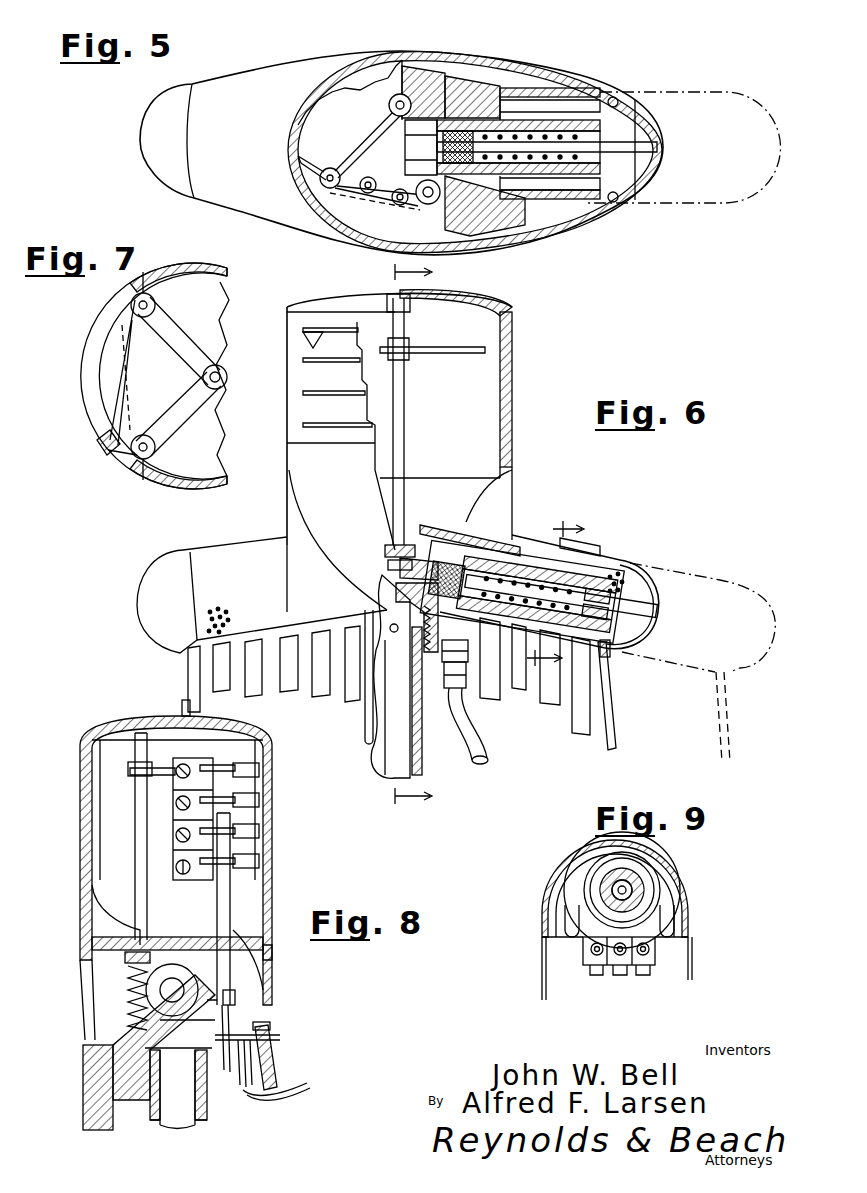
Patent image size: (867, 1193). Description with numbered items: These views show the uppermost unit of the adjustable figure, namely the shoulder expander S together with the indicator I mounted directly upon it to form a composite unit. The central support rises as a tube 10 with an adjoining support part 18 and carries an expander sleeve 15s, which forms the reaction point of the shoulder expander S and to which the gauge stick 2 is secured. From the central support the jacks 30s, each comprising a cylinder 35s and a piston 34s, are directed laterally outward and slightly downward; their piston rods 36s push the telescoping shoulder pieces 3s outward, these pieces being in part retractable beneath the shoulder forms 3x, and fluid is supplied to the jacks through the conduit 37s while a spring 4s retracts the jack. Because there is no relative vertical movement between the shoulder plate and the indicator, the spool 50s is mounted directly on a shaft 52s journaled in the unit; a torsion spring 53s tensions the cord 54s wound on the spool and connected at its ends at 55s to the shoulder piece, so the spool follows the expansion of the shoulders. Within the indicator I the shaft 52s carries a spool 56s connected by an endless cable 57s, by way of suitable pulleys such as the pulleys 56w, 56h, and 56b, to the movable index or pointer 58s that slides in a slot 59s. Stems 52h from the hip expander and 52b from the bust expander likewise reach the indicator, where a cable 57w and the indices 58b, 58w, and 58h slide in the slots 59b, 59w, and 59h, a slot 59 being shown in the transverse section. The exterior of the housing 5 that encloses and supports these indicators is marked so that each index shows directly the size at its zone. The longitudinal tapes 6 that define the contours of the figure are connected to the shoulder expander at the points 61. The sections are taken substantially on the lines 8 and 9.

In FIG. 8, the gauge stick 2 is at (92, 1117).
In FIG. 5, the telescoping shoulder pieces 3s is at (150, 157).
In FIG. 6, the telescoping shoulder pieces 3s is at (710, 546).
In FIG. 9, the telescoping shoulder pieces 3s is at (660, 903).
In FIG. 5, the shoulder forms 3x is at (215, 193).
In FIG. 6, the shoulder forms 3x is at (210, 548).
In FIG. 9, the shoulder forms 3x is at (552, 870).
In FIG. 6, the spring 4s is at (608, 656).
In FIG. 5, the housing 5 is at (300, 181).
In FIG. 7, the housing 5 is at (195, 265).
In FIG. 6, the housing 5 is at (292, 403).
In FIG. 8, the housing 5 is at (90, 798).
In FIG. 6, the longitudinals 6 is at (215, 672).
In FIG. 8, the longitudinals 6 is at (284, 1086).
In FIG. 9, the longitudinals 6 is at (612, 968).
In FIG. 5, the section line 8- 8 is at (406, 273).
In FIG. 6, the section line 8- 8 is at (406, 796).
In FIG. 6, the section line 9- 9 is at (555, 594).
In FIG. 6, the tube 10 is at (422, 764).
In FIG. 8, the tube 10 is at (192, 1117).
In FIG. 6, the expander sleeve 15s is at (375, 663).
In FIG. 8, the expander sleeve 15s is at (123, 1072).
In FIG. 6, the pipe coupling 18 is at (400, 752).
In FIG. 8, the pipe coupling 18 is at (178, 1109).
In FIG. 5, the jacks 30s is at (560, 126).
In FIG. 6, the jacks 30s is at (502, 628).
In FIG. 8, the jacks 30s is at (215, 992).
In FIG. 5, the pistons 34s is at (470, 162).
In FIG. 6, the pistons 34s is at (465, 572).
In FIG. 5, the cylinders 35s is at (545, 172).
In FIG. 6, the cylinders 35s is at (575, 562).
In FIG. 9, the cylinders 35s is at (625, 876).
In FIG. 5, the piston rods 36s is at (640, 140).
In FIG. 6, the piston rods 36s is at (625, 587).
In FIG. 9, the piston rods 36s is at (618, 893).
In FIG. 6, the conduit 37s is at (478, 762).
In FIG. 6, the spool 50s is at (408, 542).
In FIG. 8, the spool 50s is at (125, 958).
In FIG. 6, the shaft 52s is at (406, 418).
In FIG. 8, the shaft 52s is at (142, 911).
In FIG. 8, the stems 52h is at (228, 1012).
In FIG. 8, the stems 52b is at (295, 1063).
In FIG. 8, the torsion spring 53s is at (126, 1016).
In FIG. 5, the wire or cord 54s is at (462, 120).
In FIG. 6, the wire or cord 54s is at (445, 530).
In FIG. 8, the wire or cord 54s is at (173, 990).
In FIG. 6, the cord connection 55s is at (565, 550).
In FIG. 5, the spool 56s is at (405, 98).
In FIG. 7, the spool 56s is at (217, 366).
In FIG. 6, the spool 56s is at (410, 350).
In FIG. 8, the spool 56s is at (135, 769).
In FIG. 5, the pulley 56w is at (364, 177).
In FIG. 5, the pulley 56h is at (397, 205).
In FIG. 8, the pulley 56h is at (218, 895).
In FIG. 5, the pulley 56b is at (436, 206).
In FIG. 8, the pulley 56b is at (200, 816).
In FIG. 5, the endless cable 57s is at (372, 136).
In FIG. 7, the endless cable 57s is at (112, 406).
In FIG. 6, the endless cable 57s is at (432, 354).
In FIG. 8, the endless cable 57s is at (162, 776).
In FIG. 8, the endless cable 57w is at (203, 845).
In FIG. 7, the movable index or pointer 58s is at (100, 451).
In FIG. 6, the movable index or pointer 58s is at (312, 330).
In FIG. 8, the movable index or pointer 58s is at (263, 770).
In FIG. 8, the index 58b is at (263, 800).
In FIG. 8, the index 58w is at (263, 830).
In FIG. 8, the index 58h is at (263, 860).
In FIG. 7, the slot 59 is at (93, 334).
In FIG. 6, the slot 59s is at (340, 328).
In FIG. 8, the slot 59s is at (280, 748).
In FIG. 6, the slot 59b is at (302, 362).
In FIG. 6, the slot 59w is at (304, 396).
In FIG. 6, the slot 59h is at (304, 428).
In FIG. 6, the point of connection 61 is at (606, 660).
In FIG. 8, the point of connection 61 is at (262, 1027).
In FIG. 9, the point of connection 61 is at (590, 960).
In FIG. 5, the indicator I is at (290, 135).
In FIG. 7, the indicator I is at (228, 294).
In FIG. 6, the indicator I is at (513, 382).
In FIG. 8, the indicator I is at (92, 768).
In FIG. 5, the shoulder expander S is at (283, 63).
In FIG. 6, the shoulder expander S is at (278, 540).
In FIG. 8, the shoulder expander S is at (92, 987).
In FIG. 9, the shoulder expander S is at (690, 899).